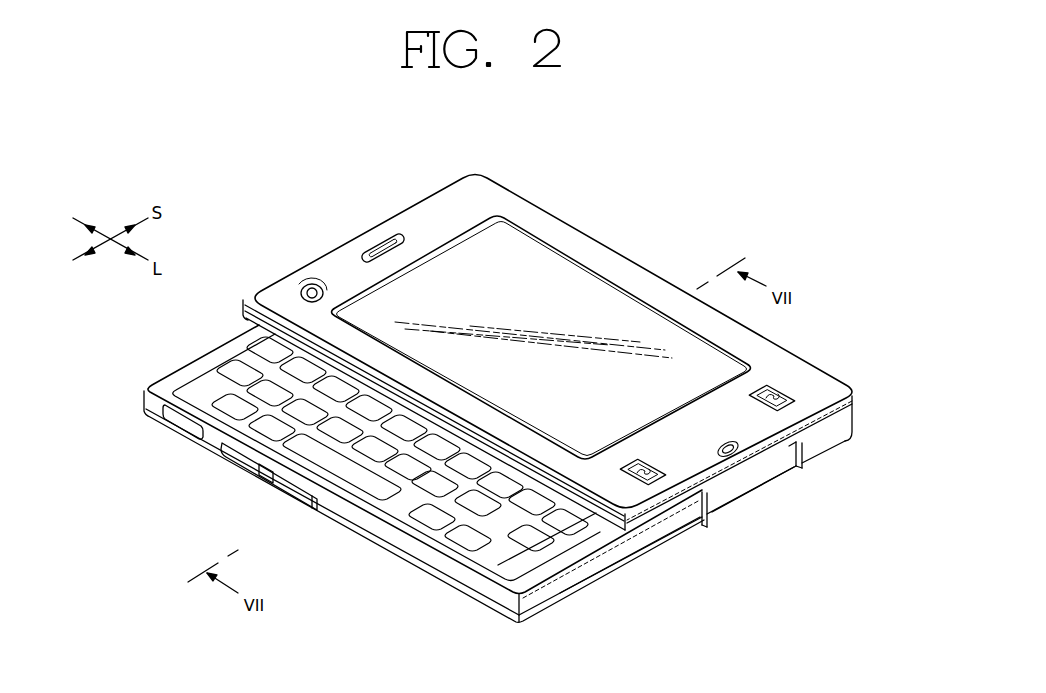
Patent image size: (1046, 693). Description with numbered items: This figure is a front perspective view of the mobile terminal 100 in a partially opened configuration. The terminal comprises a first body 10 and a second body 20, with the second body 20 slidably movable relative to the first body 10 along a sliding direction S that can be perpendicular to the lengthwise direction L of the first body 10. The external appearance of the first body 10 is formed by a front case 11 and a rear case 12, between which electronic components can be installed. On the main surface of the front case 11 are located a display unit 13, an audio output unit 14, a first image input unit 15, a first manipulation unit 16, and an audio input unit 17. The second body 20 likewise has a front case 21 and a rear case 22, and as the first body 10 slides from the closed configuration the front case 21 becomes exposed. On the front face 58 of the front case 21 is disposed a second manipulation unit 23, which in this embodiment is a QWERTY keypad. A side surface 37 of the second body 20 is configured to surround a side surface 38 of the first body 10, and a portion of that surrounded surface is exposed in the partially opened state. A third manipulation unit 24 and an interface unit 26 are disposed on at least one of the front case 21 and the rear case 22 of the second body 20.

The mobile terminal 100 is at (792, 194).
The first body 10 is at (410, 188).
The front case 11 is at (851, 398).
The rear case 12 is at (843, 422).
The display unit 13 is at (565, 273).
The audio output unit 14 is at (378, 248).
The first image input unit 15 is at (308, 289).
The first manipulation unit 16 is at (783, 395).
The audio input unit 17 is at (733, 452).
The second body 20 is at (358, 556).
The front case 21 is at (625, 555).
The rear case 22 is at (580, 594).
The second manipulation unit 23 is at (266, 349).
The third manipulation unit 24 is at (247, 464).
The interface unit 26 is at (187, 422).
The side surface 37 is at (679, 526).
The side surface 38 is at (732, 502).
The front face 58 is at (190, 376).